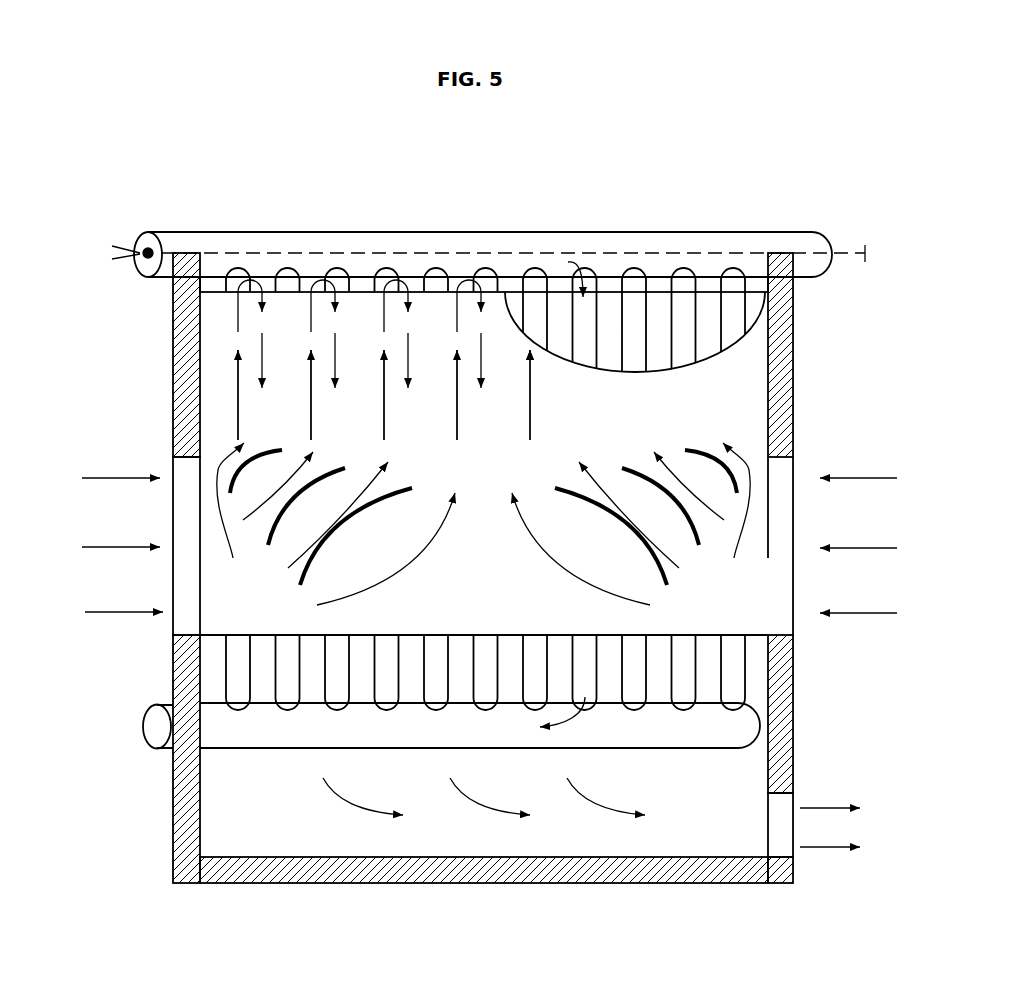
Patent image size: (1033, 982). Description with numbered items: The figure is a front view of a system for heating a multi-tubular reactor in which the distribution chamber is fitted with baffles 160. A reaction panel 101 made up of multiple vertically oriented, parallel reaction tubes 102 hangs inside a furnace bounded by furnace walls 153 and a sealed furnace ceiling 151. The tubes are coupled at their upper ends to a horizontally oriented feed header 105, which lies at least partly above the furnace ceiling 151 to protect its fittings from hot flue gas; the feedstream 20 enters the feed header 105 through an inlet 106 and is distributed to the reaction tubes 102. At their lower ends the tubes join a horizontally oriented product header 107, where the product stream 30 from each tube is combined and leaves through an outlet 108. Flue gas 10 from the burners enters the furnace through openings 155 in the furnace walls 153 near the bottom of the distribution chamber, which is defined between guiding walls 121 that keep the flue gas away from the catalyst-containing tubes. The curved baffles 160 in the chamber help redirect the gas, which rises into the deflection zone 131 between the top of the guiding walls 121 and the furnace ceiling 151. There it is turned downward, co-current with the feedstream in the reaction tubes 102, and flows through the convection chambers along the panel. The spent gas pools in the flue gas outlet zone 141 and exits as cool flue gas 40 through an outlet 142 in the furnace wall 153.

The flue gas 10 is at (90, 478).
The feedstream 20 is at (118, 246).
The product stream 30 is at (553, 730).
The cool flue gas 40 is at (852, 808).
The reaction panel 101 is at (652, 310).
The reaction tubes 102 is at (727, 292).
The feed header 105 is at (513, 243).
The inlet 106 is at (138, 262).
The product header 107 is at (275, 737).
The outlet 108 is at (150, 727).
The guiding walls 121 is at (737, 413).
The deflection zone 131 is at (262, 292).
The flue gas outlet zone 141 is at (490, 846).
The outlet 142 is at (786, 850).
The furnace ceiling 151 is at (608, 252).
The furnace wall 153 is at (782, 348).
The opening 155 is at (793, 605).
The baffles 160 is at (700, 440).